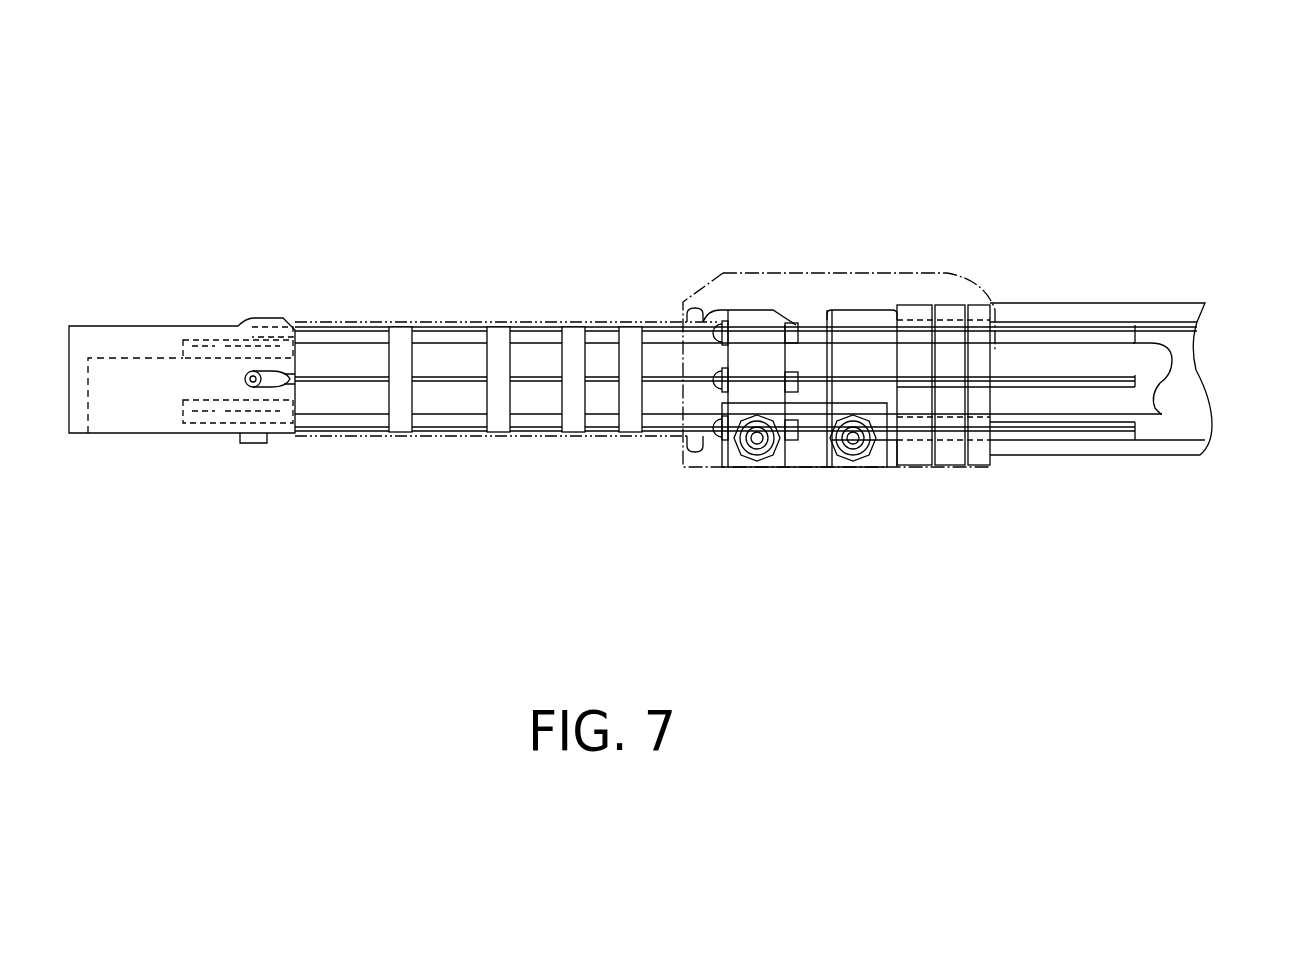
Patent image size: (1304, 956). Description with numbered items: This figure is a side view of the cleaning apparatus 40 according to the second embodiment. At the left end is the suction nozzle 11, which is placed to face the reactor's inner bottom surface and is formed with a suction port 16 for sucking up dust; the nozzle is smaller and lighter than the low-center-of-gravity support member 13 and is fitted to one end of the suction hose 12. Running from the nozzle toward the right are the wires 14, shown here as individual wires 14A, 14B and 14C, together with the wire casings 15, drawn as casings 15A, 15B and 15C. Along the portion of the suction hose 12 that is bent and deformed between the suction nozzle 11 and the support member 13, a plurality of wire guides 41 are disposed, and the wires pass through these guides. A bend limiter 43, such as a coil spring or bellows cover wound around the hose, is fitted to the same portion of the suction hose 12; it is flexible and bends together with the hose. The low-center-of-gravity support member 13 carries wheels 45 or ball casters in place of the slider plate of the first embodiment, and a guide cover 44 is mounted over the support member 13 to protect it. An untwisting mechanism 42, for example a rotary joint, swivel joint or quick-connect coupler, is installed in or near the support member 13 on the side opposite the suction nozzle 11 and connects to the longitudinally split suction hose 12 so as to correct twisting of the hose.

The suction nozzle 11 is at (150, 326).
The suction hose 12 is at (1150, 355).
The low-center-of-gravity support member 13 is at (809, 300).
The wires 14 is at (397, 523).
The wire 14A is at (472, 337).
The wire 14B is at (542, 383).
The wire 14C is at (605, 415).
The wire casings 15 is at (1003, 523).
The wire casing 15A is at (1075, 333).
The wire casing 15B is at (1040, 382).
The wire casing 15C is at (1000, 430).
The suction port 16 is at (140, 435).
The cleaning apparatus 40 is at (996, 170).
The wire guides 41 is at (400, 327).
The untwisting mechanism 42 is at (990, 362).
The bend limiter 43 is at (345, 322).
The guide cover 44 is at (890, 273).
The wheels 45 is at (757, 462).